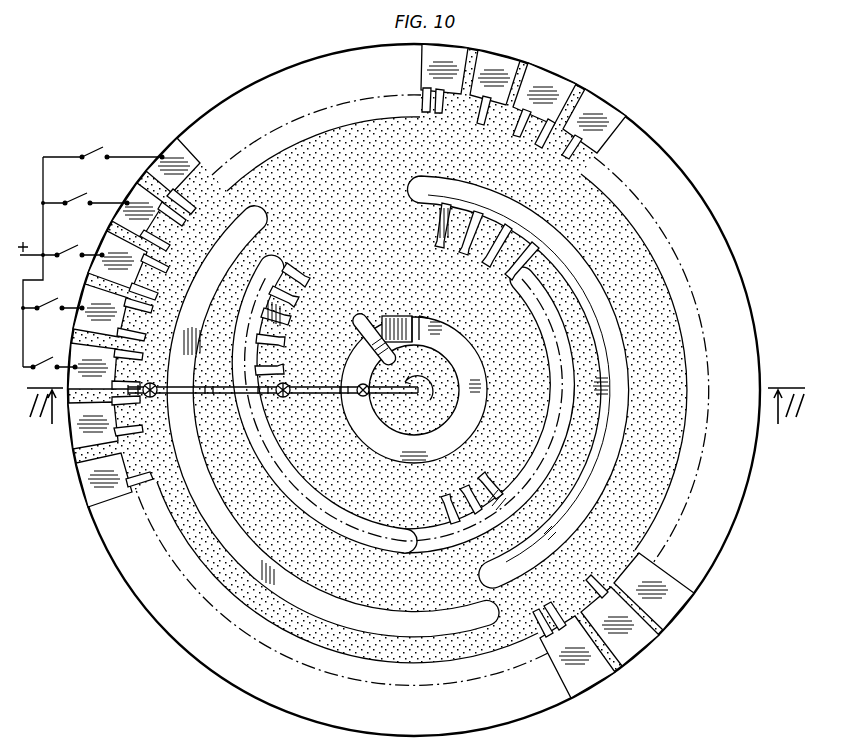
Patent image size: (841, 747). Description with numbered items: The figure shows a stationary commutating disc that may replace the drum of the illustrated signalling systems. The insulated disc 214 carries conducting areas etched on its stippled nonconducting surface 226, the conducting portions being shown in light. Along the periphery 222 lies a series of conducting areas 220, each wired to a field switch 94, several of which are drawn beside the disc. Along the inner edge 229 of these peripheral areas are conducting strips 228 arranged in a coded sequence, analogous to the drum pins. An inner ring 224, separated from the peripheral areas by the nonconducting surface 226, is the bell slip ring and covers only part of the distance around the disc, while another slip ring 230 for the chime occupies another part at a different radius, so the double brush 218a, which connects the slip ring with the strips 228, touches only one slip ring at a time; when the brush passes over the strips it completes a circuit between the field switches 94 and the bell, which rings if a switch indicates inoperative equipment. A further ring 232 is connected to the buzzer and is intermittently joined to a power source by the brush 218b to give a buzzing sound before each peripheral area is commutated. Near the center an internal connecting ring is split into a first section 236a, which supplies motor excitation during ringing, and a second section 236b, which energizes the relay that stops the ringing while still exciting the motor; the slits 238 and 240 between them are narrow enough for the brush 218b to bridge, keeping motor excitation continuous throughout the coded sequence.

The insulated disc 214 is at (354, 48).
The periphery 222 is at (256, 83).
The conducting areas 220 is at (548, 72).
The conducting strips 228 is at (530, 132).
The nonconducting surface 226 is at (325, 136).
The slip ring 230 is at (447, 190).
The ring 232 is at (492, 238).
The first section 236a is at (391, 316).
The slit 238 is at (420, 314).
The second section 236b is at (468, 350).
The slit 240 is at (372, 337).
The brush 218a is at (207, 396).
The brush 218b is at (305, 386).
The inner ring 224 is at (251, 222).
The inner edge 229 is at (185, 222).
The field switch 94 is at (91, 258).